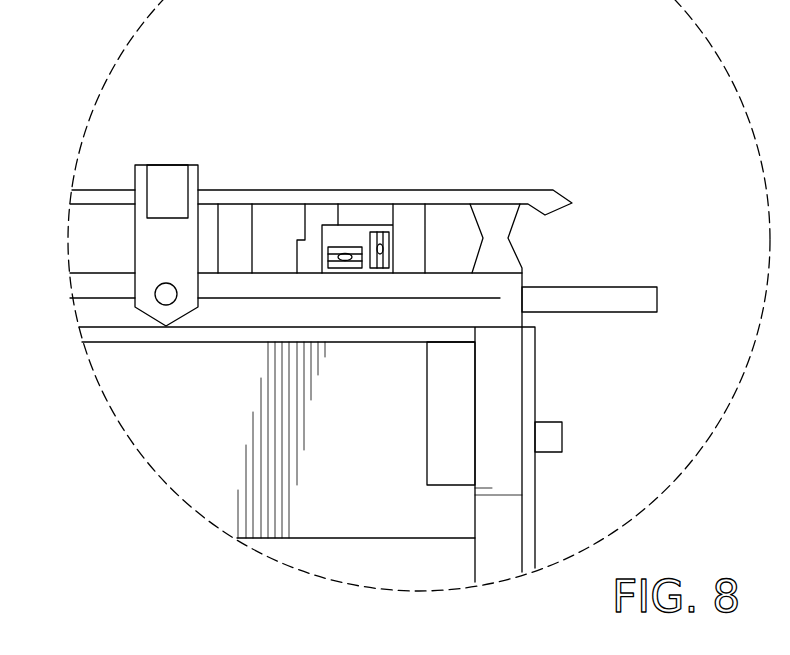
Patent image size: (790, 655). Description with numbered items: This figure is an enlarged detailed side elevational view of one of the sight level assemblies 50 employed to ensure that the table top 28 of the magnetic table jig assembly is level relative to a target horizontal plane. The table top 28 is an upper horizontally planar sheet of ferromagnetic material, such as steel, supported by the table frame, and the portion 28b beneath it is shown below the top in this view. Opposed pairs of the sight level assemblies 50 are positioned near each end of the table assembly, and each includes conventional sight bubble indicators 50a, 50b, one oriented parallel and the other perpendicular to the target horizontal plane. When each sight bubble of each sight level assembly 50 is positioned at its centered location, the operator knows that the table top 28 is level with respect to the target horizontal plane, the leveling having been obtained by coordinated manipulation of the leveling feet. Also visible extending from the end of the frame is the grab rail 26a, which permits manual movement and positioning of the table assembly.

The table top 28 is at (103, 272).
The lower body portion of base 28b is at (390, 453).
The sight level assembly 50 is at (392, 165).
The sight bubble indicator 50a is at (349, 247).
The sight bubble indicator 50b is at (390, 247).
The grab rail 26a is at (622, 298).